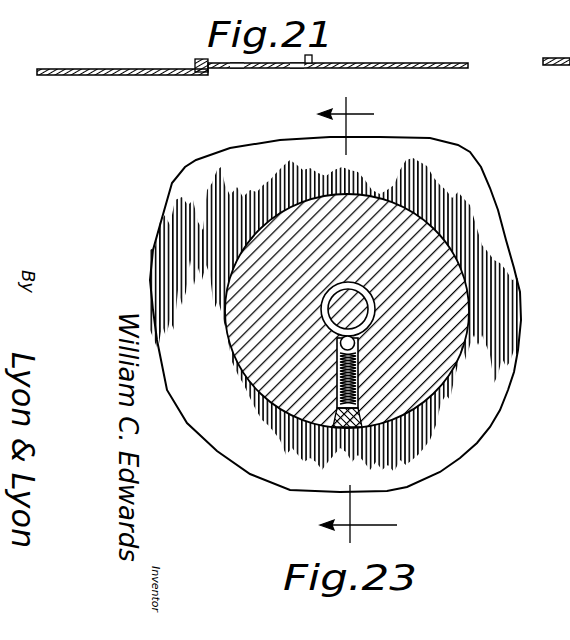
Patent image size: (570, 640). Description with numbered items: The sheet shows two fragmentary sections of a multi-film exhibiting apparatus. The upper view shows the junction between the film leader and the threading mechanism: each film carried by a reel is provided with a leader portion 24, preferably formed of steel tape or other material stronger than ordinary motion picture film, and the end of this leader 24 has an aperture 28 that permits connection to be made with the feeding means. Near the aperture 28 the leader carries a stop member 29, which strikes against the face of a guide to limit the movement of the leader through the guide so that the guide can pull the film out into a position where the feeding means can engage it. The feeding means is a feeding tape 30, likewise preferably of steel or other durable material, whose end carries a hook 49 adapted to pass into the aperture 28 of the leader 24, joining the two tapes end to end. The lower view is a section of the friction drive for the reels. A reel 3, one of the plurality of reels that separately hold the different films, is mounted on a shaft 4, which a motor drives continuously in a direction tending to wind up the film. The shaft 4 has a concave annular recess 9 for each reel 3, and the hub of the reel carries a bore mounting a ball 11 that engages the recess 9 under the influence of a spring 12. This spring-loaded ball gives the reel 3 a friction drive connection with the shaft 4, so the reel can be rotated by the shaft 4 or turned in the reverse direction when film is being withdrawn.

In FIG. 23, the reel 3 is at (499, 210).
In FIG. 23, the shaft 4 is at (322, 313).
In FIG. 23, the concave annular recess 9 is at (329, 323).
In FIG. 23, the ball 11 is at (341, 343).
In FIG. 23, the spring 12 is at (337, 378).
In FIG. 21, the leader portion 24 is at (433, 63).
In FIG. 23, the leader portion 24 is at (360, 320).
In FIG. 21, the aperture 28 is at (228, 68).
In FIG. 21, the stop member 29 is at (312, 59).
In FIG. 21, the feeding tape 30 is at (123, 75).
In FIG. 21, the hook 49 is at (203, 59).